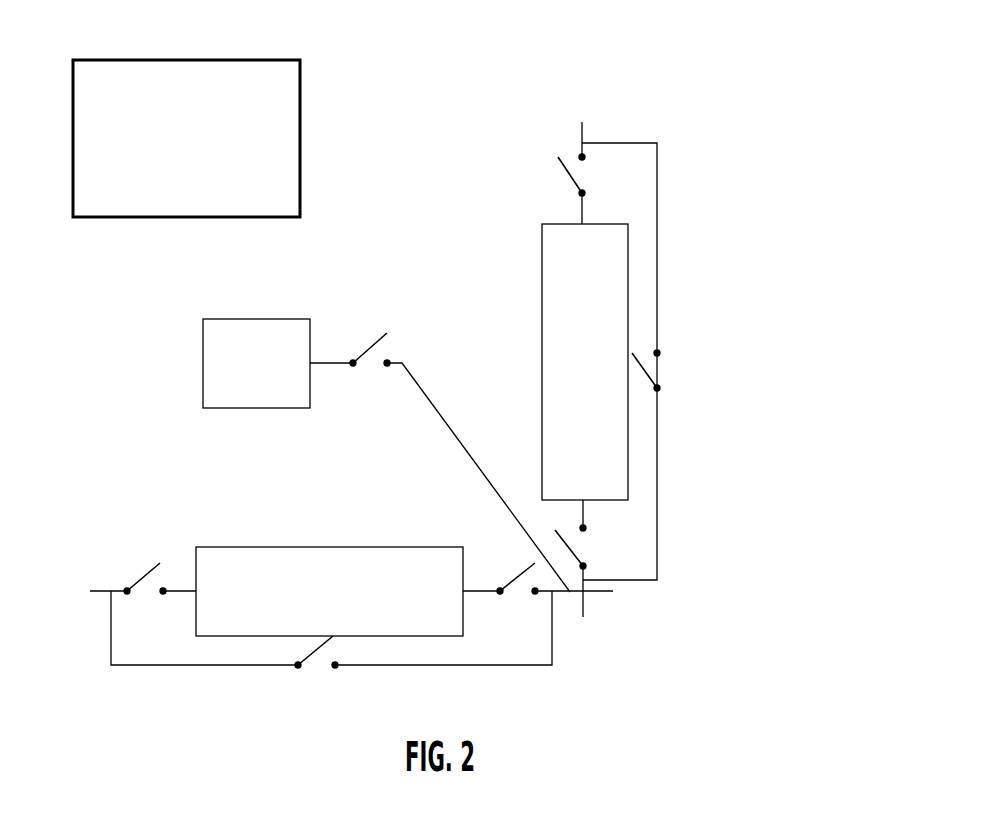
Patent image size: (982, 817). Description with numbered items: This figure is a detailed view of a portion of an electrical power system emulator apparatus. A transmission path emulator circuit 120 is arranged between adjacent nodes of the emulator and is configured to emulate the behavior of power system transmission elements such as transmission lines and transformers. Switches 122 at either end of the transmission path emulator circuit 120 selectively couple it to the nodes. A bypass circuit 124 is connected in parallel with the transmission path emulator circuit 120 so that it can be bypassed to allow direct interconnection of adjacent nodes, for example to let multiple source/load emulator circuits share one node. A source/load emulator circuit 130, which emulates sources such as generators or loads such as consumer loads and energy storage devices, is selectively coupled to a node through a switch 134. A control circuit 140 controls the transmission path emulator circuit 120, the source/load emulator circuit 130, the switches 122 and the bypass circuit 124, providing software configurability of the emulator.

The control circuit 140 is at (176, 60).
The transmission path emulator circuit 120 is at (518, 311).
The switch 122 is at (528, 152).
The bypass circuit 124 is at (676, 368).
The source/load emulator circuit 130 is at (163, 302).
The switch 134 is at (353, 328).